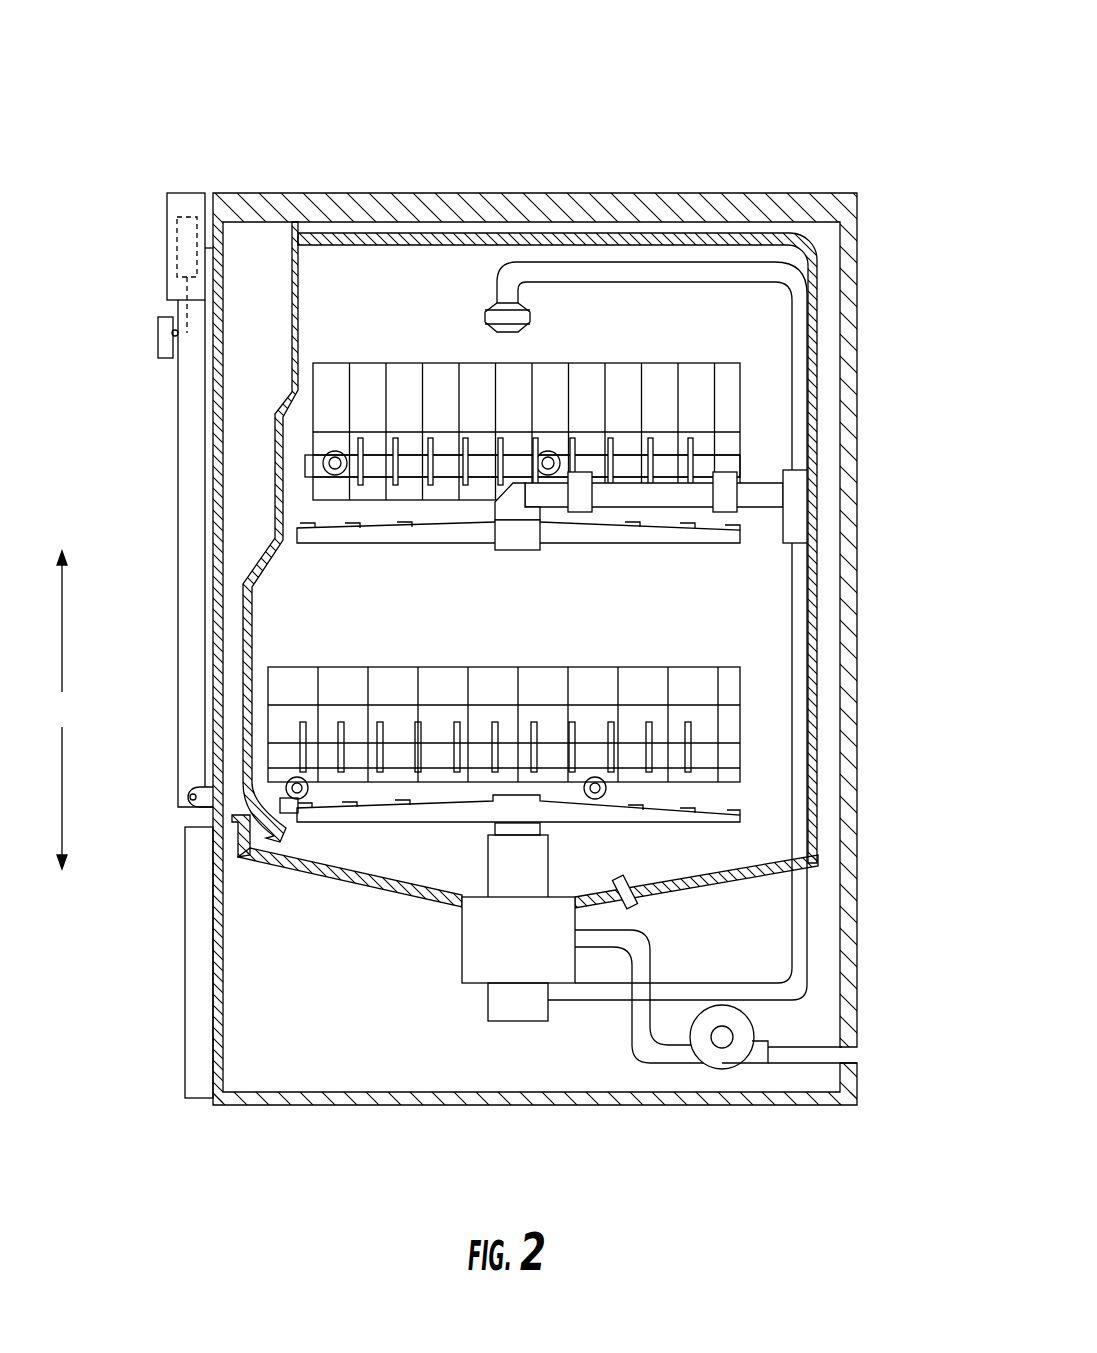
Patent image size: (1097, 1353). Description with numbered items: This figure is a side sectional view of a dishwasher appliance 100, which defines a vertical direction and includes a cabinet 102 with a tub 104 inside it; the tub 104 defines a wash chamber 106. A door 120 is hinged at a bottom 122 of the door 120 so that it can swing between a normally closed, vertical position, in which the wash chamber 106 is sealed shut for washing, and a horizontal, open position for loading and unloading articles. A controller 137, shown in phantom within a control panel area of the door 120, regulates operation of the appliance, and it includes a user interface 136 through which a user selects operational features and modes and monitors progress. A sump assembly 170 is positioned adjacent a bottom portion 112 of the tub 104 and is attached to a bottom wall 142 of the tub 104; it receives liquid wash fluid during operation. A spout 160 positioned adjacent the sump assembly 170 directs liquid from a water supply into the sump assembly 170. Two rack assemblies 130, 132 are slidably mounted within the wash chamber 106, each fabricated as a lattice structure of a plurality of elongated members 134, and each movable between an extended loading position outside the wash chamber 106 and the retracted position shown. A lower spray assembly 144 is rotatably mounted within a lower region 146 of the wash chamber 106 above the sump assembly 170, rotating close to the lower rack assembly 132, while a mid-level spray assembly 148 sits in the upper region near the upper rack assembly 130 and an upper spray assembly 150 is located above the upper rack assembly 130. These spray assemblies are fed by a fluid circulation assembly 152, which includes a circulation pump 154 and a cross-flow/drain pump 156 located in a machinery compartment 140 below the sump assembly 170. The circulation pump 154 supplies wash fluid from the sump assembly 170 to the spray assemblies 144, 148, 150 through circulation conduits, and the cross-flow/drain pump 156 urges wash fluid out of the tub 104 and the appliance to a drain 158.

The dishwasher appliance 100 is at (725, 72).
The cabinet 102 is at (857, 250).
The tub 104 is at (818, 675).
The wash chamber 106 is at (287, 605).
The bottom portion 112 is at (214, 1104).
The door 120 is at (178, 676).
The bottom 122 is at (178, 805).
The rack assembly 130 is at (360, 356).
The rack assembly 132 is at (598, 658).
The elongated members 134 is at (415, 435).
The user interface 136 is at (160, 338).
The controller 137 is at (170, 244).
The machinery compartment 140 is at (348, 1073).
The bottom wall 142 is at (775, 868).
The lower spray assembly 144 is at (357, 815).
The lower region 146 is at (758, 829).
The mid-level spray assembly 148 is at (545, 540).
The upper spray assembly 150 is at (522, 330).
The fluid circulation assembly 152 is at (802, 340).
The circulation pump 154 is at (493, 1013).
The cross-flow/drain pump 156 is at (717, 1057).
The drain 158 is at (864, 1057).
The spout 160 is at (632, 905).
The sump assembly 170 is at (460, 918).